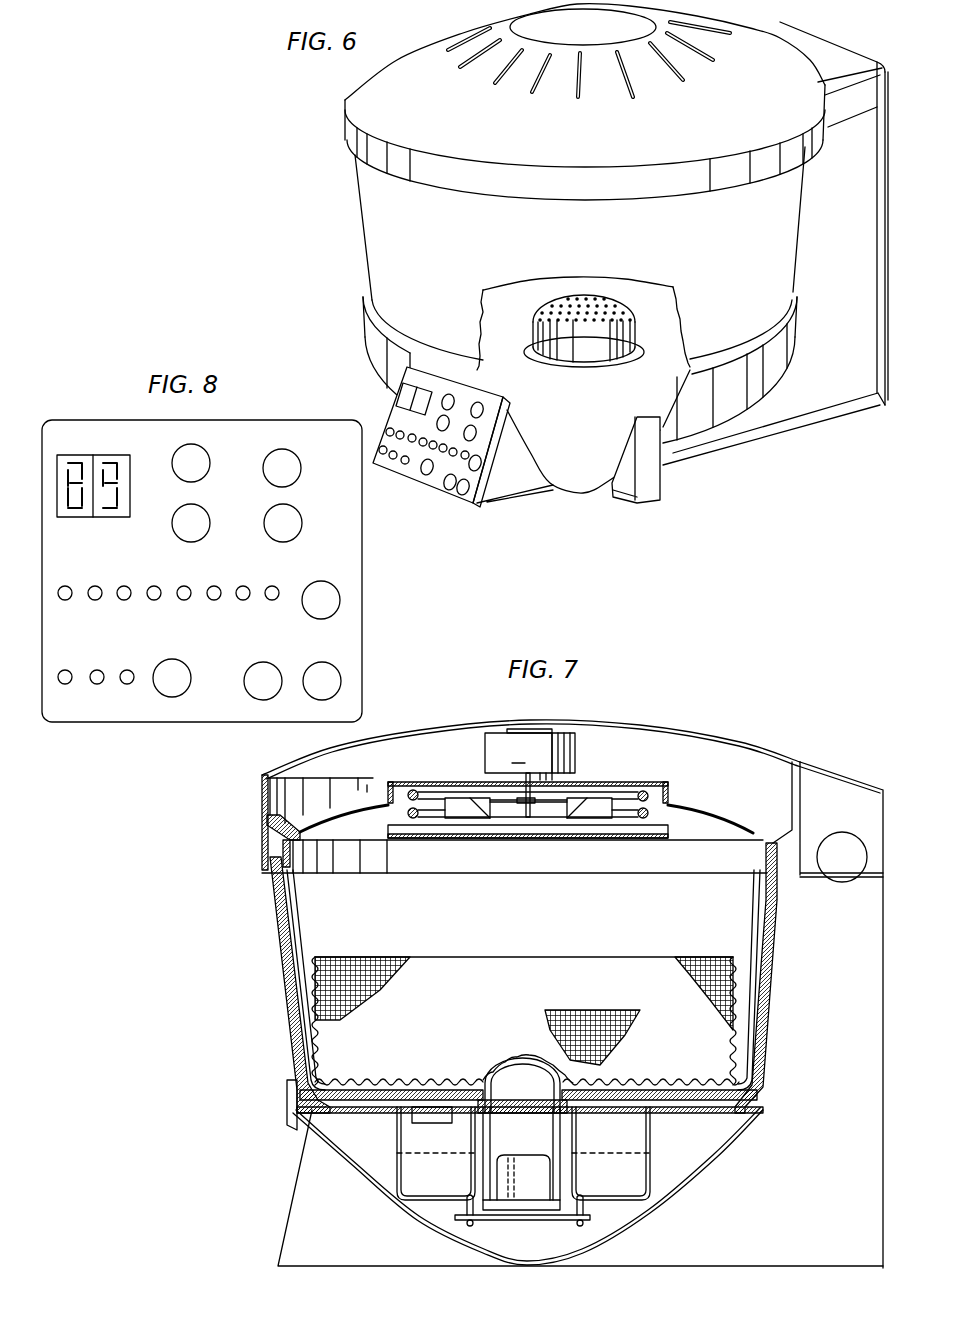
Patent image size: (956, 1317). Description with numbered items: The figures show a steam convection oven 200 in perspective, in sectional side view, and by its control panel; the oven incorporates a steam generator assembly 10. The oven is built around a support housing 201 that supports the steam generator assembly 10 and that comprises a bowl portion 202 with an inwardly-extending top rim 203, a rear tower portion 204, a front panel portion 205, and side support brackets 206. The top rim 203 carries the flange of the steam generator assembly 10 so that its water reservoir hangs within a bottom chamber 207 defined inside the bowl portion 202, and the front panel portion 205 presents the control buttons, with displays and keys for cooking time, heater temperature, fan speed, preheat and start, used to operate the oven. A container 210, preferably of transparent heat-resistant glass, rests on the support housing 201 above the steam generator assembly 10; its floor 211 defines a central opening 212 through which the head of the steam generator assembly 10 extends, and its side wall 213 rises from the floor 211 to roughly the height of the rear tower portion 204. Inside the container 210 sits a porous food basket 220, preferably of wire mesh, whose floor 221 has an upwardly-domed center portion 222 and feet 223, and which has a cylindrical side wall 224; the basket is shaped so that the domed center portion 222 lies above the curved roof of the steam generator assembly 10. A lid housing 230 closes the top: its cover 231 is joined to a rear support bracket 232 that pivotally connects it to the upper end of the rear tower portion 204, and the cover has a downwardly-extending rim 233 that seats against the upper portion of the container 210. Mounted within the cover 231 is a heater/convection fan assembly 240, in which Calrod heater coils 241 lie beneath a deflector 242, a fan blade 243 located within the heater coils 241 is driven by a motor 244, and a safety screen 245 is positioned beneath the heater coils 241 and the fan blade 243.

In FIG. 7, the steam generator assembly 10 is at (660, 1170).
In FIG. 6, the steam convection oven 200 is at (310, 200).
In FIG. 7, the steam convection oven 200 is at (255, 930).
In FIG. 6, the support housing 201 is at (823, 420).
In FIG. 7, the support housing 201 is at (297, 1266).
In FIG. 6, the bowl portion 202 is at (583, 467).
In FIG. 7, the bowl portion 202 is at (337, 1160).
In FIG. 7, the top rim 203 is at (308, 1114).
In FIG. 6, the rear tower portion 204 is at (856, 264).
In FIG. 7, the rear tower portion 204 is at (845, 1127).
In FIG. 6, the front panel portion 205 is at (440, 473).
In FIG. 8, the front panel portion 205 is at (350, 611).
In FIG. 6, the side support brackets 206 is at (653, 470).
In FIG. 7, the bottom chamber 207 is at (705, 1151).
In FIG. 6, the container 210 is at (360, 263).
In FIG. 7, the container 210 is at (280, 1010).
In FIG. 7, the floor 211 is at (366, 1093).
In FIG. 7, the central opening 212 is at (483, 1078).
In FIG. 7, the side wall 213 is at (763, 936).
In FIG. 7, the food basket 220 is at (422, 951).
In FIG. 7, the floor 221 is at (657, 1080).
In FIG. 7, the upwardly-domed center portion 222 is at (530, 1050).
In FIG. 7, the feet 223 is at (722, 1082).
In FIG. 7, the cylindrical side wall 224 is at (325, 1033).
In FIG. 6, the lid housing 230 is at (345, 88).
In FIG. 7, the lid housing 230 is at (253, 789).
In FIG. 6, the cover 231 is at (417, 53).
In FIG. 7, the cover 231 is at (718, 743).
In FIG. 6, the rear support bracket 232 is at (822, 50).
In FIG. 7, the downwardly-extending rim 233 is at (262, 810).
In FIG. 7, the heater/convection fan assembly 240 is at (691, 818).
In FIG. 7, the Calrod heater coils 241 is at (650, 792).
In FIG. 7, the deflector 242 is at (738, 826).
In FIG. 7, the fan blade 243 is at (600, 812).
In FIG. 7, the motor 244 is at (485, 757).
In FIG. 7, the safety screen 245 is at (447, 840).